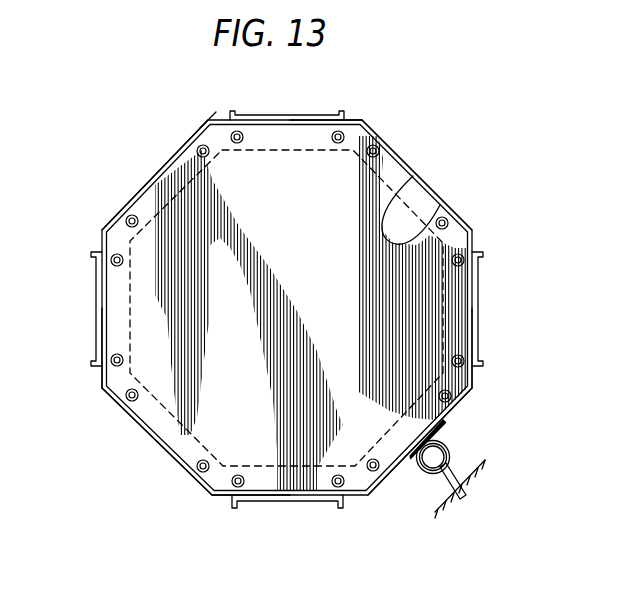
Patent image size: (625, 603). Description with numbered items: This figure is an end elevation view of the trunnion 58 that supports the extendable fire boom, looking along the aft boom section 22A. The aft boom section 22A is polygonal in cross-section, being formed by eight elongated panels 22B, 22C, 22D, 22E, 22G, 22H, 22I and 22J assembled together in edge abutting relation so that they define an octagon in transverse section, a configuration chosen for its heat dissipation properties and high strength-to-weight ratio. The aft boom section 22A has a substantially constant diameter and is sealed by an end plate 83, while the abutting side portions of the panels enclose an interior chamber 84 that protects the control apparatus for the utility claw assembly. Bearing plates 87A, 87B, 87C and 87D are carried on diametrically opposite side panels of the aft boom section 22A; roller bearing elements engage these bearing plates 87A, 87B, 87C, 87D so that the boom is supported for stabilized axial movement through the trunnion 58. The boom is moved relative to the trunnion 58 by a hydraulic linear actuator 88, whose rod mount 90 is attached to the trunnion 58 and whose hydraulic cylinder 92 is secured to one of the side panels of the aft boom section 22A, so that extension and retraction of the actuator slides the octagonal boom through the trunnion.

The aft boom section 22A is at (408, 100).
The elongated panel 22B is at (355, 122).
The elongated panel 22C is at (413, 176).
The elongated panel 22D is at (476, 380).
The elongated panel 22E is at (366, 498).
The elongated panel 22G is at (215, 498).
The elongated panel 22H is at (143, 429).
The elongated panel 22I is at (101, 379).
The elongated panel 22J is at (133, 197).
The trunnion 58 is at (204, 122).
The end plate 83 is at (172, 180).
The interior chamber 84 is at (400, 227).
The bearing plate 87A is at (268, 122).
The bearing plate 87B is at (478, 293).
The bearing plate 87C is at (277, 500).
The bearing plate 87D is at (97, 283).
The hydraulic linear actuator 88 is at (452, 451).
The rod mount 90 is at (444, 486).
The hydraulic cylinder 92 is at (442, 428).